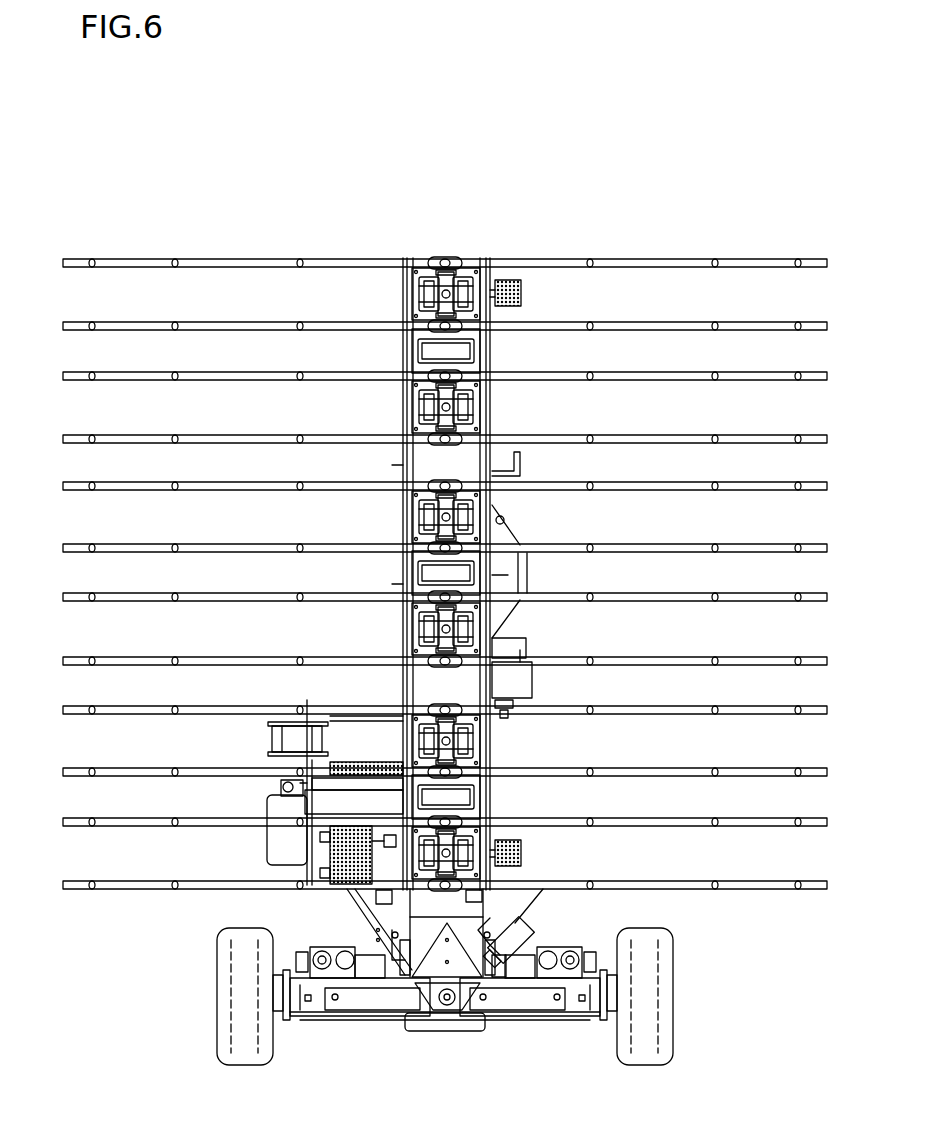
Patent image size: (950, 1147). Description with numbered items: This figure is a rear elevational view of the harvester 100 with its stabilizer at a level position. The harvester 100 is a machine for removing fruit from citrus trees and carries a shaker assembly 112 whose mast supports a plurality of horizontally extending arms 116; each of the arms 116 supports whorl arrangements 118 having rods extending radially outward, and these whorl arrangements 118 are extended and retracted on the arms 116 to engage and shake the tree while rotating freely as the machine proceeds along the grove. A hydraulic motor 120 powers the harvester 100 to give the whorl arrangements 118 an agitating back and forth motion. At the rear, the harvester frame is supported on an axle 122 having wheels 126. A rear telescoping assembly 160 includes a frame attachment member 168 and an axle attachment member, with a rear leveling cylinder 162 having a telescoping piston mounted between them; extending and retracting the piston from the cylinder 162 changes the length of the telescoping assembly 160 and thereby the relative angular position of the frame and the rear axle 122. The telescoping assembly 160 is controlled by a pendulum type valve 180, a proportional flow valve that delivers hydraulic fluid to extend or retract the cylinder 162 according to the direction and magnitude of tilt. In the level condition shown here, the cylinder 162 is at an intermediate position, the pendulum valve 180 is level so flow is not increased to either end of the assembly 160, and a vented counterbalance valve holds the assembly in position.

The harvester 100 is at (571, 146).
The whorl arrangements 118 is at (76, 266).
The arms 116 is at (472, 408).
The hydraulic motor 120 is at (313, 851).
The pendulum type valve 180 is at (282, 789).
The shaker assembly 112 is at (142, 943).
The wheels 126 is at (224, 933).
The axle 122 is at (526, 997).
The rear telescoping assembly 160 is at (578, 927).
The frame attachment member 168 is at (485, 914).
The rear leveling cylinder 162 is at (515, 942).